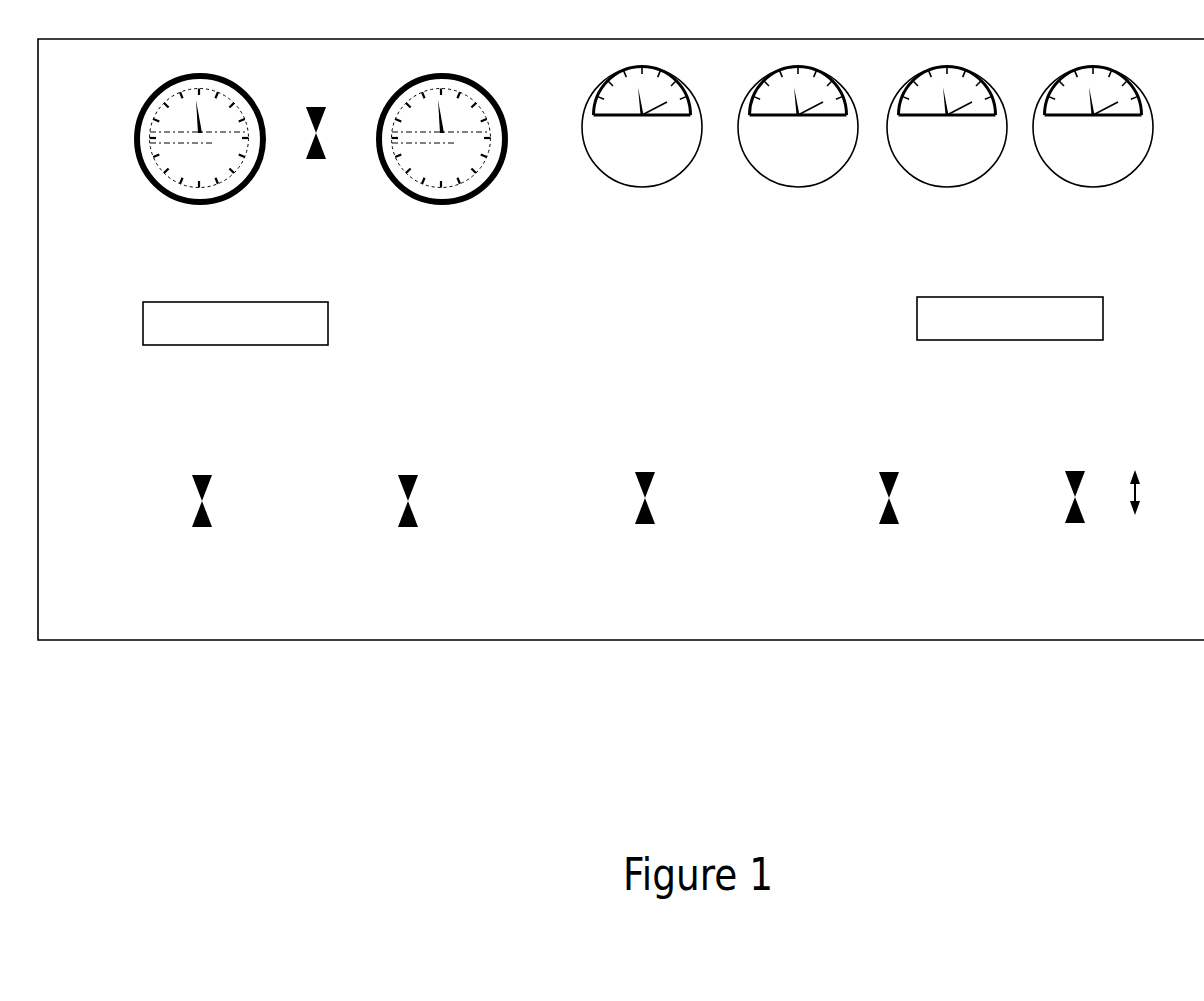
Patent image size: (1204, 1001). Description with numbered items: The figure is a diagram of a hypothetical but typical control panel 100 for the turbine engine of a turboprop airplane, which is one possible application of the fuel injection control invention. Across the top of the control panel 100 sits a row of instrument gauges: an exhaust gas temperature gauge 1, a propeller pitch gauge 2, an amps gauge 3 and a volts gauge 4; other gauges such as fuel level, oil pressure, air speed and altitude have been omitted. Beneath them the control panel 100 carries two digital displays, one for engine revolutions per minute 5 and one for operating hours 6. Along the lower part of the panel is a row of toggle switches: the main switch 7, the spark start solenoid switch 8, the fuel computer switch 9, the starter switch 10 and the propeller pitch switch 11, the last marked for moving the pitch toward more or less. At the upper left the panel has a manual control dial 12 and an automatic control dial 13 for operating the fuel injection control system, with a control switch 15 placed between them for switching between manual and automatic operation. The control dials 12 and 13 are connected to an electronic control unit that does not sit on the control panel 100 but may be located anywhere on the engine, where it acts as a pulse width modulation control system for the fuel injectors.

The control panel 100 is at (621, 382).
The exhaust gas temperature gauge 1 is at (642, 141).
The propeller pitch gauge 2 is at (798, 141).
The amps gauge 3 is at (947, 141).
The volts gauge 4 is at (1093, 141).
The engine RPM digital display 5 is at (242, 325).
The operating hours digital display 6 is at (1018, 318).
The main switch 7 is at (204, 529).
The spark start solenoid switch 8 is at (417, 542).
The fuel computer switch 9 is at (647, 539).
The starter switch 10 is at (890, 539).
The propeller pitch switch 11 is at (1090, 525).
The manual control dial 12 is at (200, 154).
The automatic control dial 13 is at (442, 154).
The control switch 15 is at (313, 157).